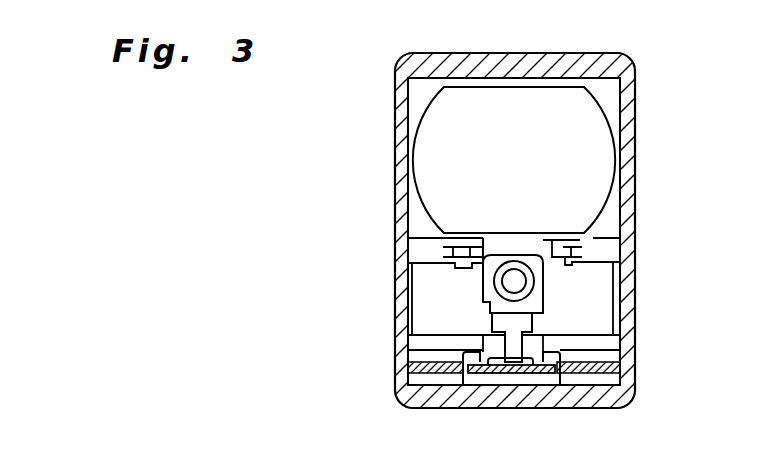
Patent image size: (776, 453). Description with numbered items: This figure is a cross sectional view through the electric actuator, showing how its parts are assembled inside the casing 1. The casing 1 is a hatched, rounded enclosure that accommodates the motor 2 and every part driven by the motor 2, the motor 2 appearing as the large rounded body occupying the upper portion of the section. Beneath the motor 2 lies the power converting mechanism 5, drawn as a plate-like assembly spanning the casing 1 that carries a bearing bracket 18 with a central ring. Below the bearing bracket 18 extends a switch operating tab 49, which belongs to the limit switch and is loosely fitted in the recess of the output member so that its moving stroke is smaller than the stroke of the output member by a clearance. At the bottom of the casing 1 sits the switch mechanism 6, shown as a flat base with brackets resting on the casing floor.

The casing 1 is at (473, 68).
The motor 2 is at (573, 128).
The power converting mechanism 5 is at (520, 282).
The bearing bracket 18 is at (490, 279).
The switch operating tab 49 is at (520, 318).
The switch mechanism 6 is at (483, 343).